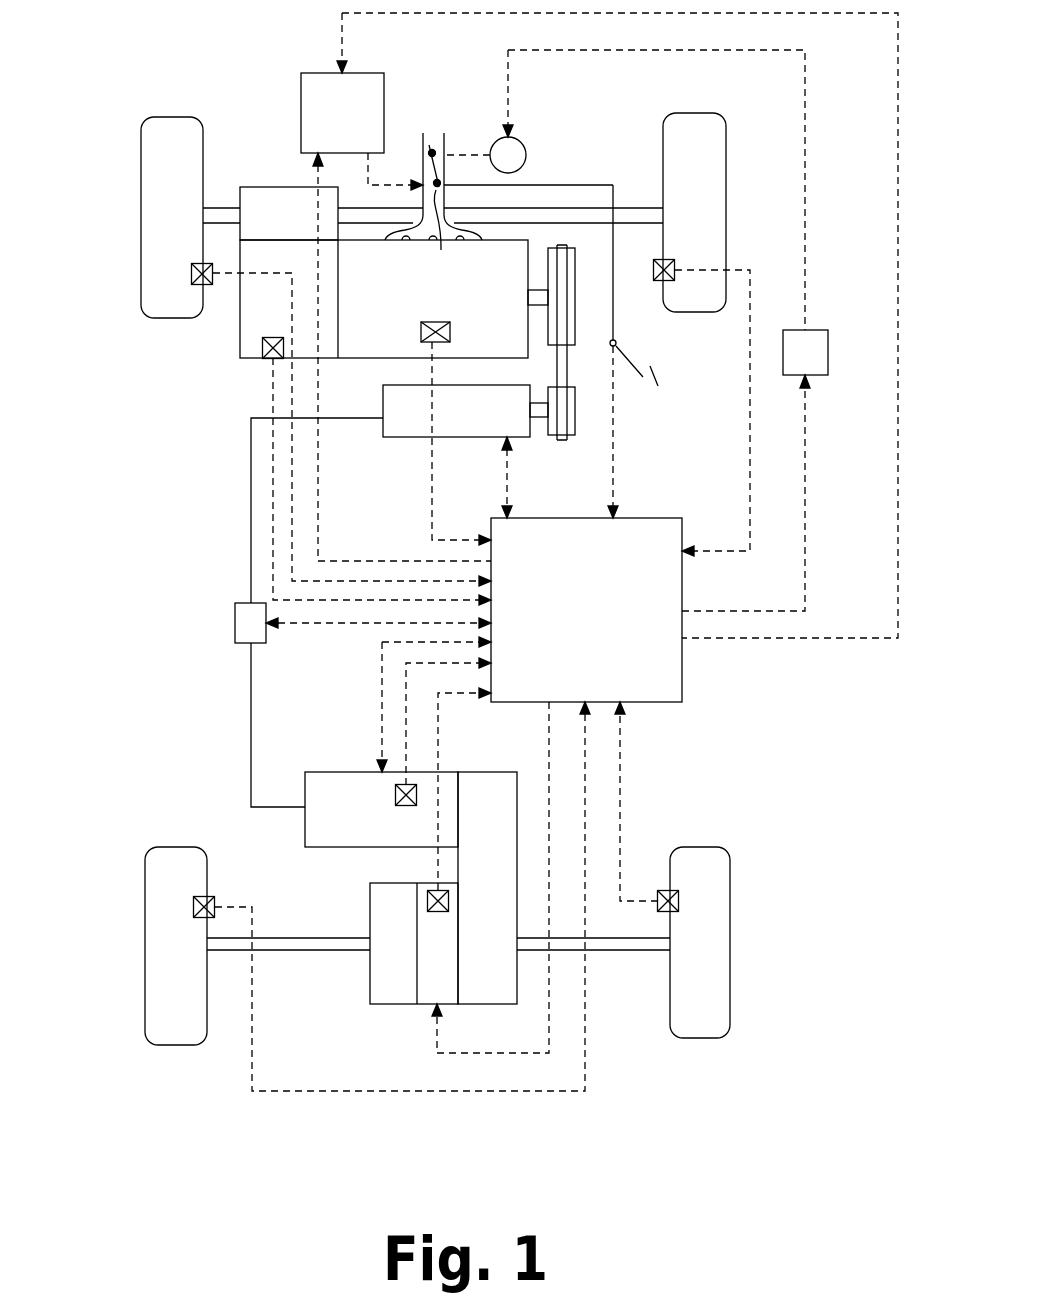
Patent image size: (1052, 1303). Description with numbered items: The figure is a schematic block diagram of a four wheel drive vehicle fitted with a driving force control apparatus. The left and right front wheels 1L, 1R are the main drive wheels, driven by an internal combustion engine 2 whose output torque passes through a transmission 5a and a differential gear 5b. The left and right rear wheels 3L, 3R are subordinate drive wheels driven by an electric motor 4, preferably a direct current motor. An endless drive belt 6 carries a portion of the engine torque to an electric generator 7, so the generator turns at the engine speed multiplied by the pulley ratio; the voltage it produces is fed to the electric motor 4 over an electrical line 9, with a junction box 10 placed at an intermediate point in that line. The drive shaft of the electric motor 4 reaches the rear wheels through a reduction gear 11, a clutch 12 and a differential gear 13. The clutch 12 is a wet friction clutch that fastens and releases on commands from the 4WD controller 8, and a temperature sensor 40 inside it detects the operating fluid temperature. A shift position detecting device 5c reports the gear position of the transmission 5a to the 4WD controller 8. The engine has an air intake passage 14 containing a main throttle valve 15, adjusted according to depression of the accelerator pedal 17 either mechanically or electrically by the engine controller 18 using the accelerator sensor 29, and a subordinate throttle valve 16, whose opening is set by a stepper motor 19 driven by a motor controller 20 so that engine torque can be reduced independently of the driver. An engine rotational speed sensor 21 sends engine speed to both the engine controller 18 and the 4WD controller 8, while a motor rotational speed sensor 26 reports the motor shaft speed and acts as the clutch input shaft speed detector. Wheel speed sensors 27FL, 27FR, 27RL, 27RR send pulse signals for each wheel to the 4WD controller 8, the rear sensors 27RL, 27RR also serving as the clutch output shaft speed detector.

The left front wheel 1L is at (141, 172).
The right front wheel 1R is at (726, 165).
The internal combustion engine 2 is at (383, 347).
The left rear wheel 3L is at (145, 900).
The right rear wheel 3R is at (730, 882).
The electric motor 4 is at (330, 775).
The transmission 5a is at (259, 316).
The differential gear 5b is at (293, 187).
The shift position detecting device 5c is at (263, 350).
The endless drive belt 6 is at (568, 363).
The electric generator 7 is at (400, 430).
The 4WD controller 8 is at (672, 646).
The electrical line 9 is at (251, 532).
The junction box 10 is at (235, 628).
The reduction gear 11 is at (488, 988).
The clutch 12 is at (422, 988).
The differential gear 13 is at (375, 962).
The air intake passage 14 is at (427, 148).
The main throttle valve 15 is at (449, 235).
The subordinate throttle valve 16 is at (437, 142).
The accelerator pedal 17 is at (650, 372).
The engine controller 18 is at (333, 73).
The stepper motor 19 is at (527, 155).
The motor controller 20 is at (815, 330).
The engine rotational speed sensor 21 is at (450, 330).
The motor rotational speed sensor 26 is at (395, 796).
The wheel speed sensor 27FL is at (192, 273).
The wheel speed sensor 27FR is at (675, 263).
The wheel speed sensor 27RL is at (194, 908).
The wheel speed sensor 27RR is at (678, 900).
The accelerator sensor 29 is at (618, 341).
The temperature sensor 40 is at (428, 901).